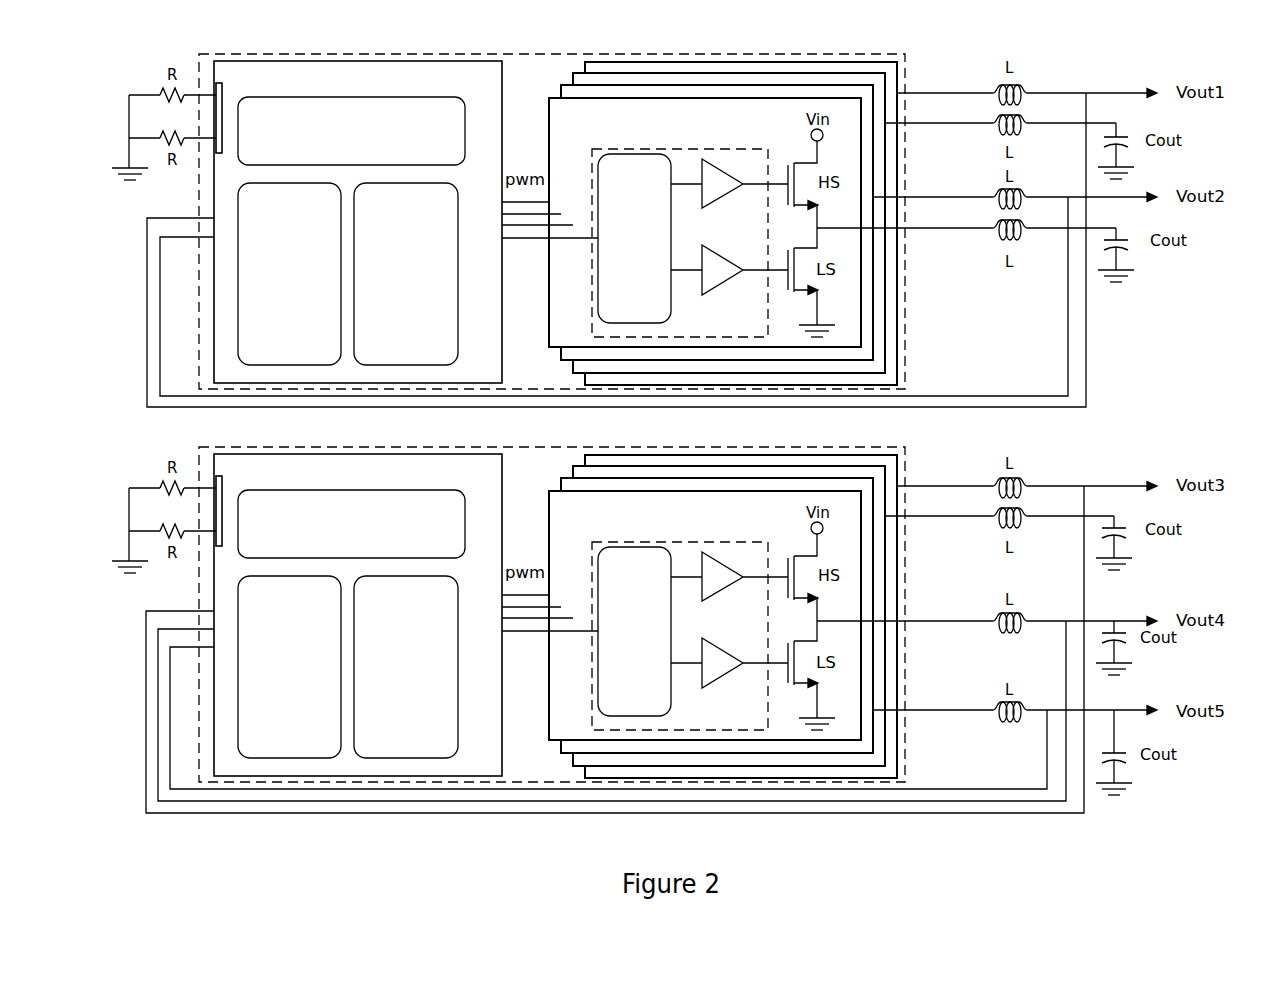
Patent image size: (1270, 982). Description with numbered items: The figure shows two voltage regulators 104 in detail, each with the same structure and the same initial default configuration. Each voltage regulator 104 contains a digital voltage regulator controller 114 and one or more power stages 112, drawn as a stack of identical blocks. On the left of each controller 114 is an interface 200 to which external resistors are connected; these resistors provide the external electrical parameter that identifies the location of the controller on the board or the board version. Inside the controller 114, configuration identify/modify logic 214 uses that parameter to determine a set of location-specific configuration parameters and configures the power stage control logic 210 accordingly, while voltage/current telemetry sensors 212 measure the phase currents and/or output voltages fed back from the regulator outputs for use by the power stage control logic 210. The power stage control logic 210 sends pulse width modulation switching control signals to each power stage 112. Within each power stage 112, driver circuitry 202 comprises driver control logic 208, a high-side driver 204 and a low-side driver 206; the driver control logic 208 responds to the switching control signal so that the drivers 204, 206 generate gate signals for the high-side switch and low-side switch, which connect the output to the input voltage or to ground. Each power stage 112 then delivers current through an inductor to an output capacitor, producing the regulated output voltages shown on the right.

The voltage regulator 104 is at (552, 418).
The digital voltage regulator controller 114 is at (358, 418).
The configuration logic 214 is at (351, 327).
The voltage and/or current telemetry sensors 212 is at (289, 470).
The power stage control logic 210 is at (406, 470).
The interface 200 is at (233, 564).
The power stage 112 is at (723, 420).
The driver circuitry 202 is at (680, 439).
The driver control logic 208 is at (634, 435).
The high-side driver 204 is at (720, 380).
The low-side driver 206 is at (720, 466).